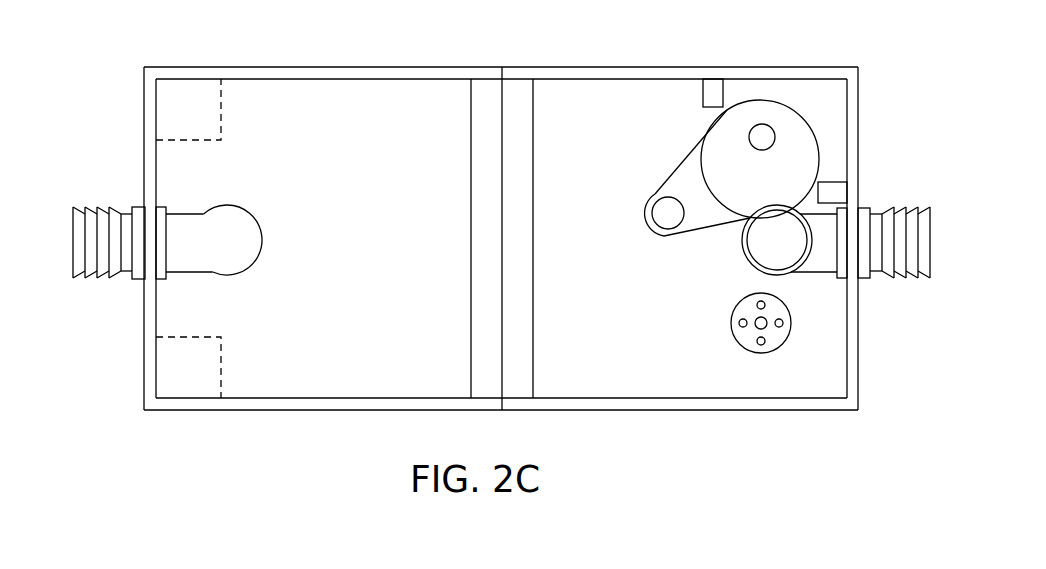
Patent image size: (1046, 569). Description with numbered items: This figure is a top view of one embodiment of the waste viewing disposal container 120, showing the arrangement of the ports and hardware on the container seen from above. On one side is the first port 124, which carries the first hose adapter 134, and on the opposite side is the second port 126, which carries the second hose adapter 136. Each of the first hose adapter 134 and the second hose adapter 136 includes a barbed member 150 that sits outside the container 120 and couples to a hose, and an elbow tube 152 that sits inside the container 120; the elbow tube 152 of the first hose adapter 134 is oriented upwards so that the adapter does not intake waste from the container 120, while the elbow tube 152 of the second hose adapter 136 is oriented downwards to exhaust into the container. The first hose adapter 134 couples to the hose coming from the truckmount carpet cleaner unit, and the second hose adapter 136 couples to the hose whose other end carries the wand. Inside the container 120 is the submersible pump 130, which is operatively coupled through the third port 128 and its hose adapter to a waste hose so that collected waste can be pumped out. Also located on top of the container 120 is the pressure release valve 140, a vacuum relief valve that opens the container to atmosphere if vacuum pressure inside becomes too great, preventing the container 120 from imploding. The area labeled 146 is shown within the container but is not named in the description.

The waste viewing disposal container 120 is at (247, 47).
The first port 124 is at (852, 223).
The second port 126 is at (151, 217).
The third port 128 is at (762, 137).
The submersible pump 130 is at (677, 170).
The first hose adapter 134 is at (935, 238).
The second hose adapter 136 is at (62, 255).
The pressure release valve 140 is at (762, 353).
The reservoir compartment 146 is at (333, 252).
The barbed member 150 is at (80, 207).
The elbow tube 152 is at (222, 207).